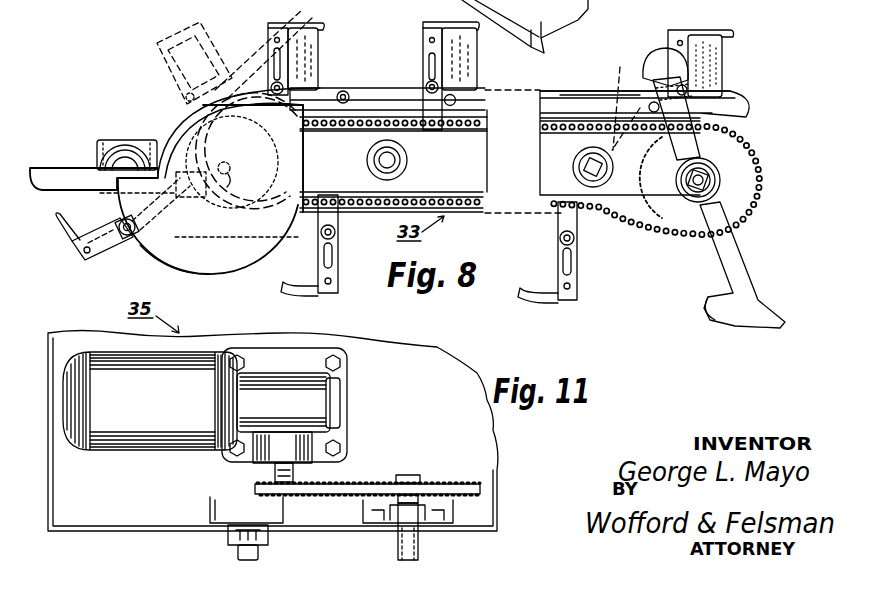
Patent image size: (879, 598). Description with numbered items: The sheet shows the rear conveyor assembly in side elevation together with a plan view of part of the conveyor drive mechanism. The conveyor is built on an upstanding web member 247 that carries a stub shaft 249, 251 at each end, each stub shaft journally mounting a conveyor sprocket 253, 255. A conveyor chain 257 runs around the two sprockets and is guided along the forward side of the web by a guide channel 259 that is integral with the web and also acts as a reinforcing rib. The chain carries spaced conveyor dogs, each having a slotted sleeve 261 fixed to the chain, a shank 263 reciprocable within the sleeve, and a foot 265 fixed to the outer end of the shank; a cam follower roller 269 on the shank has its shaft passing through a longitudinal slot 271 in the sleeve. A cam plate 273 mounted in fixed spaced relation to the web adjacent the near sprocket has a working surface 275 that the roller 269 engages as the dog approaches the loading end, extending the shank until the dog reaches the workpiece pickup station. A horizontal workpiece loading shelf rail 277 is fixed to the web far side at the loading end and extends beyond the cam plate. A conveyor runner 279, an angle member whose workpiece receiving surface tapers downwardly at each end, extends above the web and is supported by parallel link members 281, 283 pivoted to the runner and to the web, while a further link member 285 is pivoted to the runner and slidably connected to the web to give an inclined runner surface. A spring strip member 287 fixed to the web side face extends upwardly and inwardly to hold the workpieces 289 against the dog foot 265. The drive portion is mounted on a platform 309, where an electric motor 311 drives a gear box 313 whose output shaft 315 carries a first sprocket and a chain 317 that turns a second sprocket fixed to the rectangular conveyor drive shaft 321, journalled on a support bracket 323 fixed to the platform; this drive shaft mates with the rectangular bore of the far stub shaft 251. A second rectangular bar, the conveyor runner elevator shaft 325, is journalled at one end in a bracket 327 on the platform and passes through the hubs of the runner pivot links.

In FIG. 8, the web member 247 is at (481, 142).
In FIG. 8, the stub shaft 249 is at (224, 180).
In FIG. 8, the stub shaft 251 is at (713, 162).
In FIG. 8, the conveyor sprocket 253 is at (282, 160).
In FIG. 8, the conveyor sprocket 255 is at (692, 223).
In FIG. 8, the conveyor chain 257 is at (537, 205).
In FIG. 8, the guide channel 259 is at (598, 207).
In FIG. 8, the slotted sleeve 261 is at (573, 222).
In FIG. 8, the shank 263 is at (107, 250).
In FIG. 8, the foot 265 is at (72, 258).
In FIG. 8, the cam follower roller 269 is at (135, 242).
In FIG. 8, the longitudinal slot 271 is at (320, 257).
In FIG. 8, the cam plate 273 is at (240, 257).
In FIG. 8, the cam plate working surface 275 is at (173, 257).
In FIG. 8, the workpiece loading shelf rail 277 is at (52, 168).
In FIG. 8, the conveyor runner 279 is at (607, 93).
In FIG. 8, the link member 281 is at (405, 150).
In FIG. 8, the link member 283 is at (618, 67).
In FIG. 8, the link member 285 is at (322, 95).
In FIG. 8, the spring strip member 287 is at (253, 87).
In FIG. 8, the workpiece 289 is at (125, 145).
In FIG. 11, the platform 309 is at (481, 438).
In FIG. 11, the electric motor 311 is at (153, 423).
In FIG. 11, the gear box 313 is at (317, 392).
In FIG. 11, the output shaft 315 is at (271, 473).
In FIG. 11, the chain 317 is at (363, 481).
In FIG. 8, the conveyor drive shaft 321 is at (720, 180).
In FIG. 11, the conveyor drive shaft 321 is at (397, 548).
In FIG. 11, the support bracket 323 is at (455, 506).
In FIG. 8, the conveyor runner elevator shaft 325 is at (578, 166).
In FIG. 11, the conveyor runner elevator shaft 325 is at (233, 551).
In FIG. 11, the bracket 327 is at (208, 504).